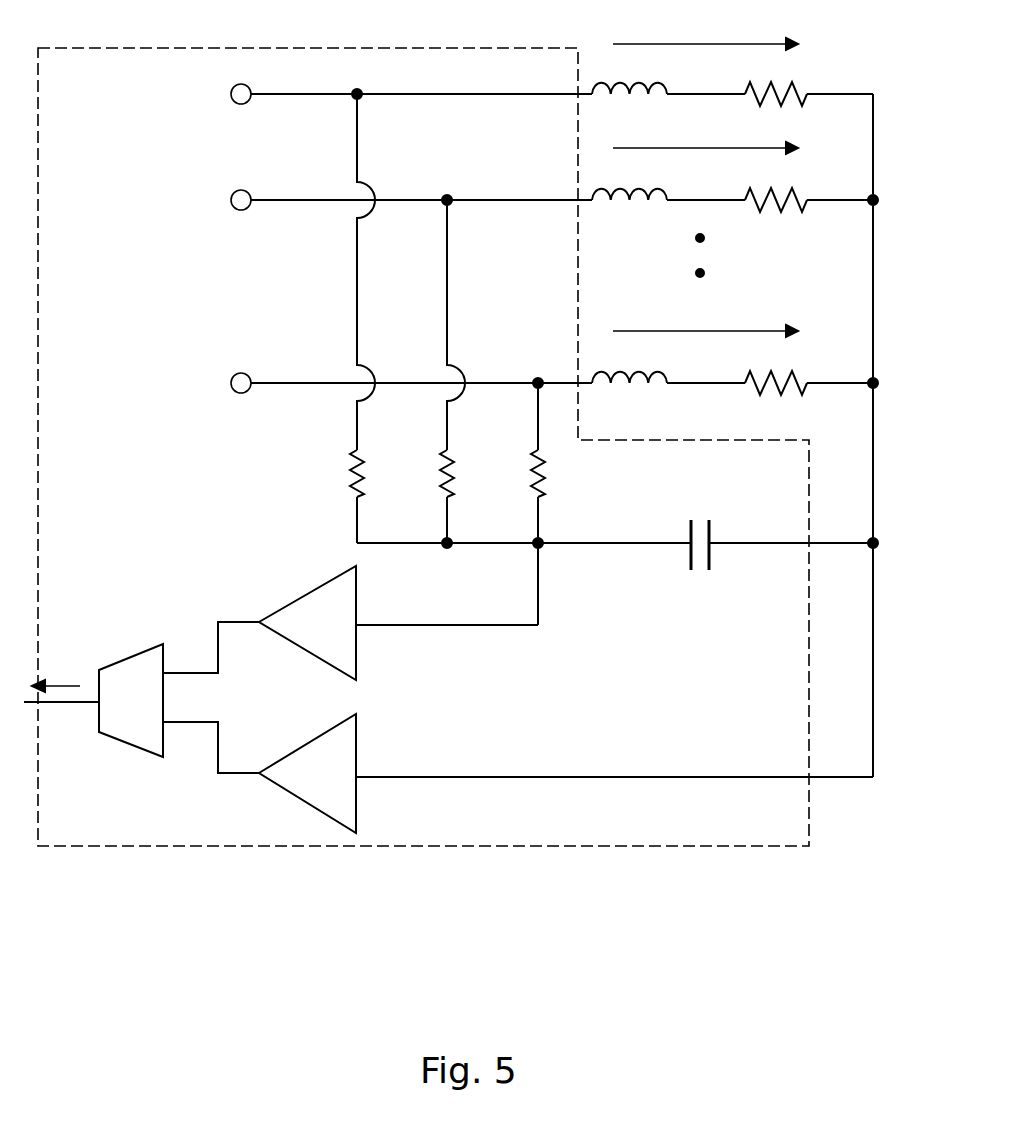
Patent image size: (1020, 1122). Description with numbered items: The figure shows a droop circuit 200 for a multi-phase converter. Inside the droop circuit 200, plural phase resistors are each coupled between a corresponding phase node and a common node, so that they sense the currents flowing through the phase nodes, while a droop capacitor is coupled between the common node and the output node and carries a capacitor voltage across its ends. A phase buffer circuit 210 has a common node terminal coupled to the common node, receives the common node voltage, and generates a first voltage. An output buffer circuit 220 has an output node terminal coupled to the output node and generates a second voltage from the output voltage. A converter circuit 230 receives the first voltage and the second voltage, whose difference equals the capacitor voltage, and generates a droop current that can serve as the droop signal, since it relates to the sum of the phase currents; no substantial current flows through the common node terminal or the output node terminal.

The droop circuit 200 is at (94, 82).
The phase buffer circuit 210 is at (341, 638).
The output buffer circuit 220 is at (336, 787).
The converter circuit 230 is at (149, 715).